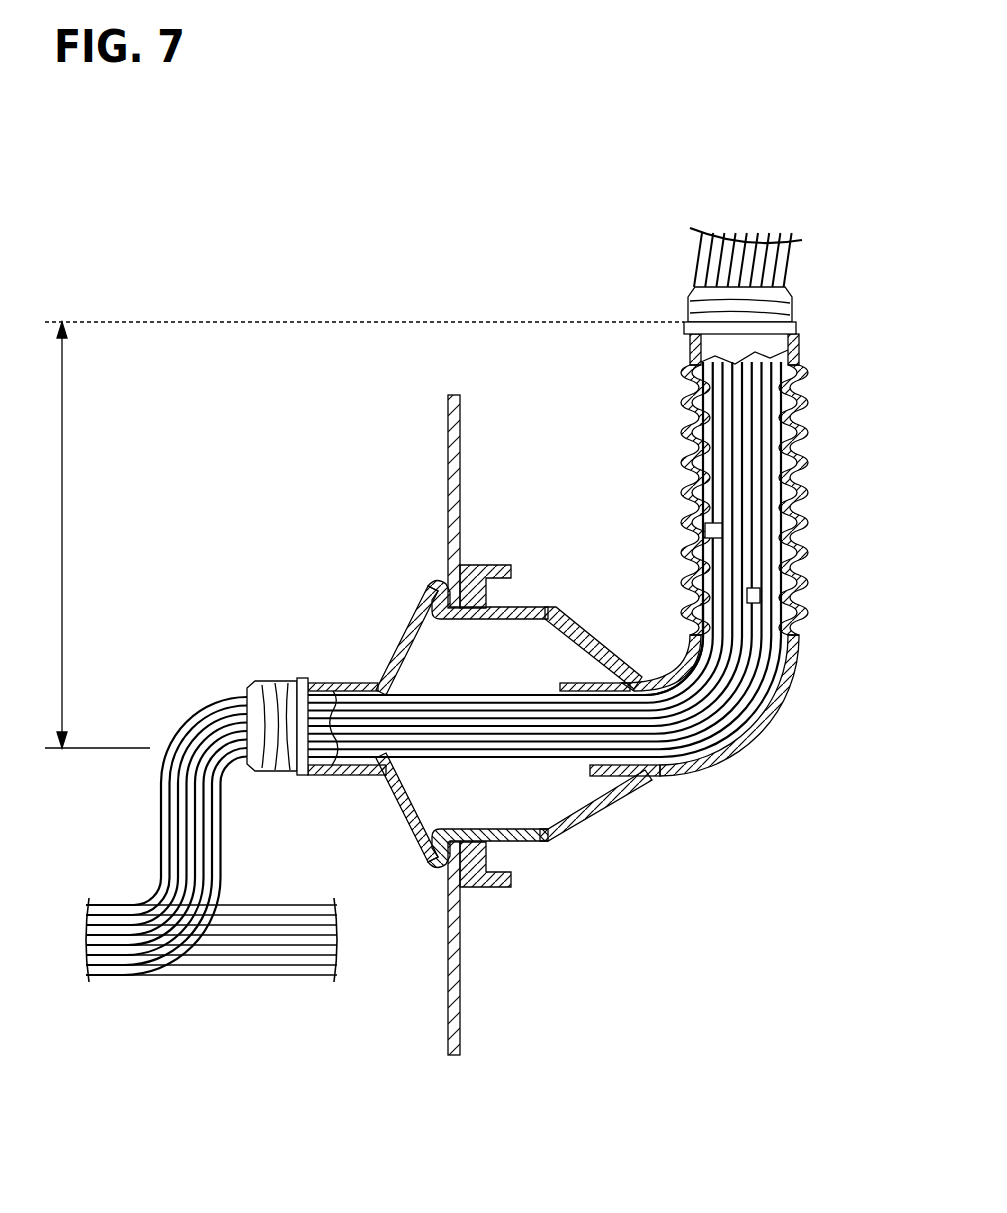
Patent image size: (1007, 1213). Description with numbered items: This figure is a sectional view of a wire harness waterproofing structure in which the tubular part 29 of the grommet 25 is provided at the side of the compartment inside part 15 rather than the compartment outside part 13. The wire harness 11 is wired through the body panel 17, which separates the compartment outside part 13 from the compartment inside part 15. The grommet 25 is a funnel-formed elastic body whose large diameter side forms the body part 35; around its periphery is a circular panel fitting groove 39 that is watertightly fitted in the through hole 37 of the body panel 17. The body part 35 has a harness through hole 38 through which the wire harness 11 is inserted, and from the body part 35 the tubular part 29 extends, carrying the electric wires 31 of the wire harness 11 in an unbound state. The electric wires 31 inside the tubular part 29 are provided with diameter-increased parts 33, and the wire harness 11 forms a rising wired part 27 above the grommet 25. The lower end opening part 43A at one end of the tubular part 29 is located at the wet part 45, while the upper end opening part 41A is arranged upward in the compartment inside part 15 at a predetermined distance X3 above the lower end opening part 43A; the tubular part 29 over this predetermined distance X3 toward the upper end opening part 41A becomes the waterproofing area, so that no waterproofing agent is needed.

The wire harness 11 is at (150, 770).
The compartment outside part 13 is at (310, 553).
The compartment inside part 15 is at (851, 447).
The body panel 17 is at (461, 975).
The grommet 25 is at (553, 583).
The rising wired part 27 is at (773, 270).
The tubular part 29 is at (797, 468).
The electric wires 31 is at (470, 712).
The diameter-increased parts 33 is at (705, 530).
The body part 35 is at (430, 857).
The through hole 37 is at (460, 822).
The harness through hole 38 is at (345, 775).
The panel fitting groove 39 is at (447, 590).
The upper end opening part 41A is at (688, 290).
The lower end opening part 43A is at (640, 735).
The wet part 45 is at (243, 982).
The predetermined distance X3 is at (364, 535).